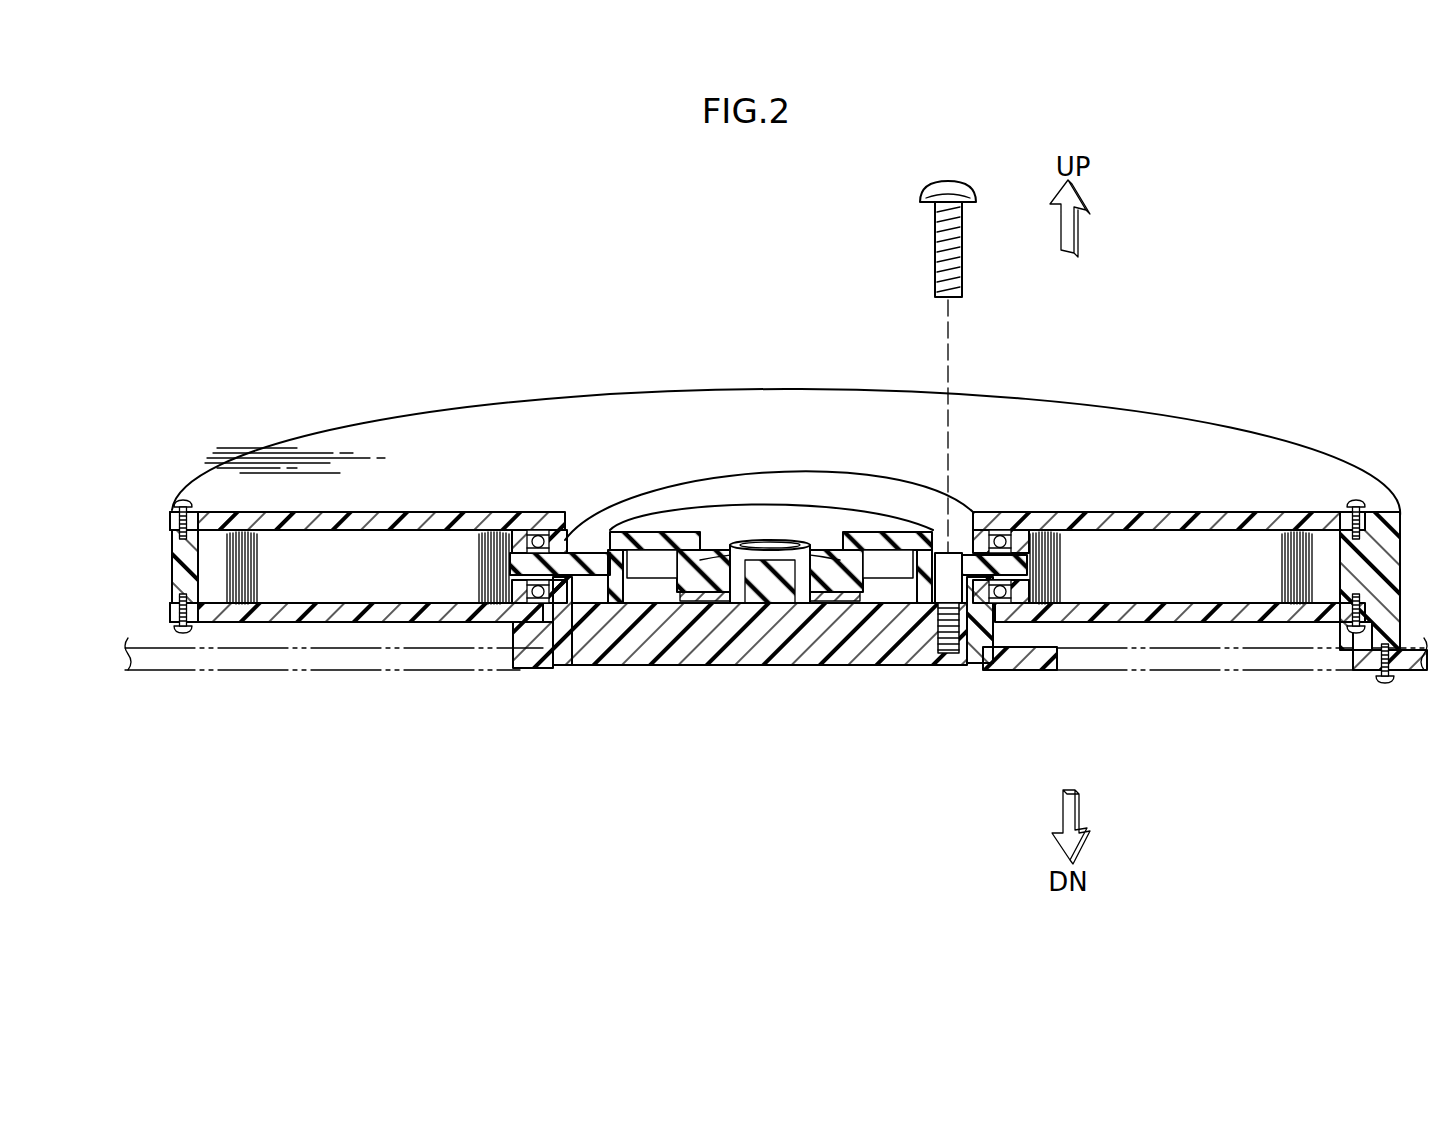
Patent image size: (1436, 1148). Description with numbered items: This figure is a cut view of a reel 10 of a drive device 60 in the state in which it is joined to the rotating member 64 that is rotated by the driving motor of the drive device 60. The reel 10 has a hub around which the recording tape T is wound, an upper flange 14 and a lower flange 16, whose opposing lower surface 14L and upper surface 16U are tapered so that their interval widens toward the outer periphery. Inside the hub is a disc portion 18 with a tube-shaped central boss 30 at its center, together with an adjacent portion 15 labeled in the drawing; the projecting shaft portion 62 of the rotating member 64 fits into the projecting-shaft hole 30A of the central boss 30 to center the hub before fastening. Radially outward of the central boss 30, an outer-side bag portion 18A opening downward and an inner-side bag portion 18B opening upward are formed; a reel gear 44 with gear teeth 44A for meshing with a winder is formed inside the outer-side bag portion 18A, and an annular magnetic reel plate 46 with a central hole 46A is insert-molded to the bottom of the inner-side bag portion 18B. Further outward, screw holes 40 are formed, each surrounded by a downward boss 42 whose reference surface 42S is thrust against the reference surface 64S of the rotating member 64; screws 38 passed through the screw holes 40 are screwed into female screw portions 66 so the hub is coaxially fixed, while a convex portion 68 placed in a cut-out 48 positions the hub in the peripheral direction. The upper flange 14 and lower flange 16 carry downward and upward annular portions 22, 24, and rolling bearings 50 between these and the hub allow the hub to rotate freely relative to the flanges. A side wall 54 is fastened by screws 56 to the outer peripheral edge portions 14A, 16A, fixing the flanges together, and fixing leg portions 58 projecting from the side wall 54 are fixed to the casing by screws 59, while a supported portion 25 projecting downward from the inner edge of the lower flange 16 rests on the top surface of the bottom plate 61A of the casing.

The reel 10 is at (1238, 420).
The upper flange 14 is at (385, 438).
The outer peripheral edge portion 14A is at (172, 522).
The lower surface 14L is at (410, 545).
The inner ring portion 15 is at (630, 497).
The lower flange 16 is at (345, 612).
The outer peripheral edge portion 16A is at (172, 618).
The upper surface 16U is at (378, 612).
The disc portion 18 is at (682, 510).
The outer-side bag portion 18A is at (880, 525).
The inner-side bag portion 18B is at (845, 598).
The annular portion 22 is at (540, 512).
The annular portion 24 is at (545, 625).
The supported portion 25 is at (562, 642).
The central boss 30 is at (770, 530).
The projecting-shaft hole 30A is at (760, 545).
The screw 38 is at (948, 185).
The screw hole 40 is at (950, 545).
The boss 42 is at (922, 635).
The reference surface 42S is at (926, 640).
The reel gear 44 is at (648, 640).
The gear teeth 44A is at (882, 615).
The reel plate 46 is at (812, 620).
The central hole 46A is at (730, 655).
The cut-out 48 is at (612, 630).
The rolling bearing 50 is at (530, 536).
The side wall 54 is at (180, 575).
The screw 56 is at (183, 503).
The fixing leg portion 58 is at (1390, 575).
The screw 59 is at (1385, 680).
The drive device 60 is at (572, 655).
The bottom plate 61A is at (1200, 672).
The projecting shaft portion 62 is at (875, 523).
The rotating member 64 is at (668, 652).
The reference surface 64S is at (915, 535).
The female screw portion 66 is at (945, 650).
The convex portion 68 is at (625, 525).
The recording tape T is at (235, 562).